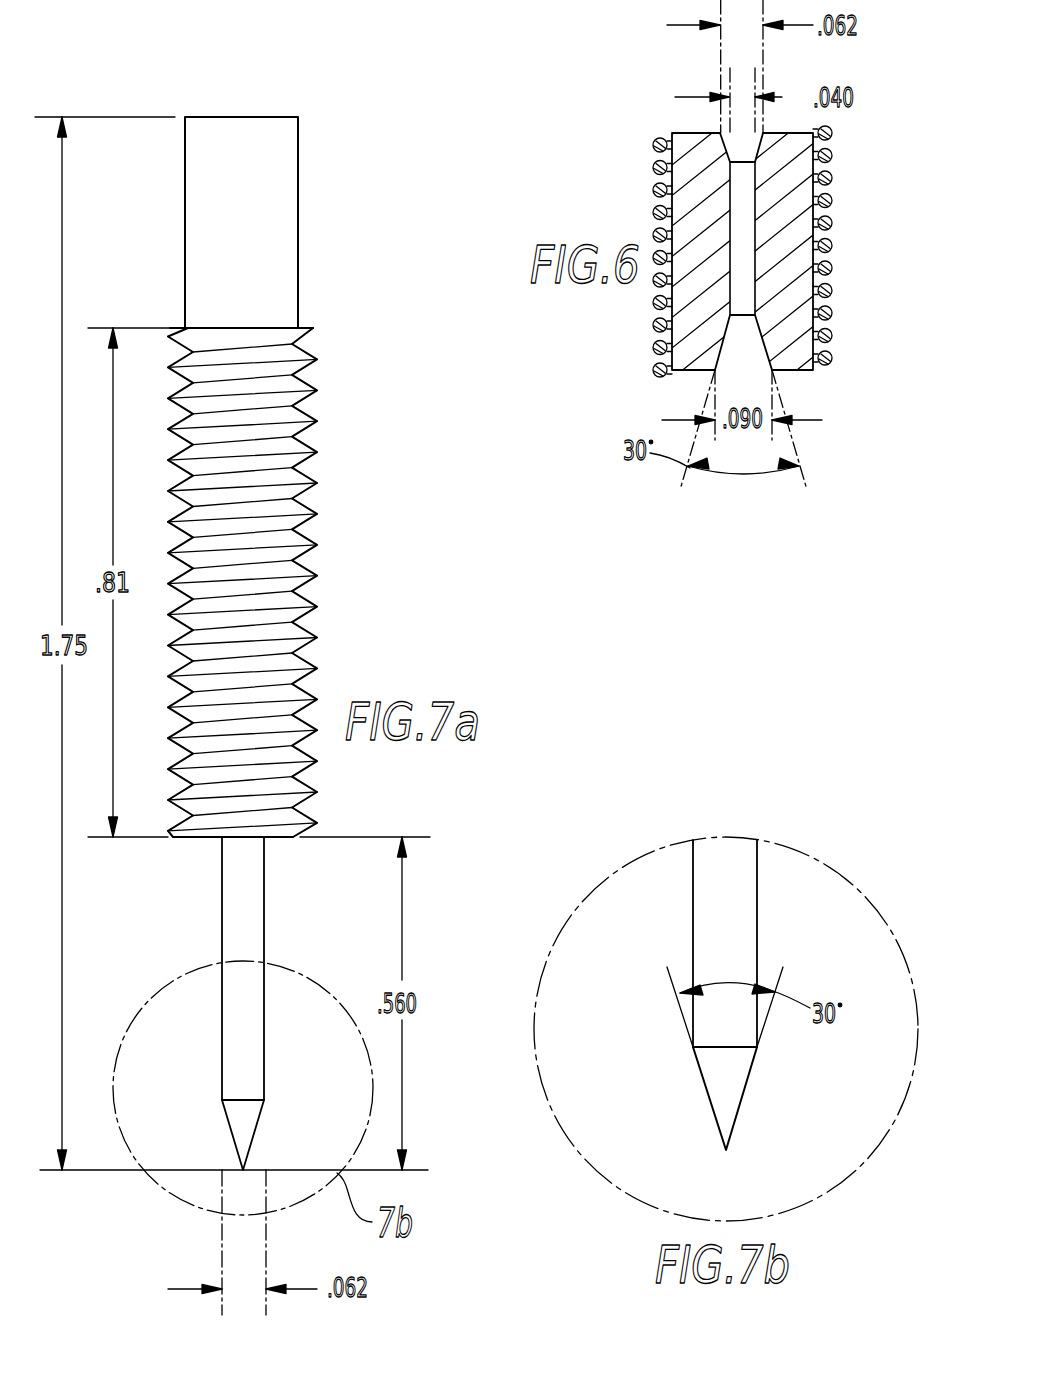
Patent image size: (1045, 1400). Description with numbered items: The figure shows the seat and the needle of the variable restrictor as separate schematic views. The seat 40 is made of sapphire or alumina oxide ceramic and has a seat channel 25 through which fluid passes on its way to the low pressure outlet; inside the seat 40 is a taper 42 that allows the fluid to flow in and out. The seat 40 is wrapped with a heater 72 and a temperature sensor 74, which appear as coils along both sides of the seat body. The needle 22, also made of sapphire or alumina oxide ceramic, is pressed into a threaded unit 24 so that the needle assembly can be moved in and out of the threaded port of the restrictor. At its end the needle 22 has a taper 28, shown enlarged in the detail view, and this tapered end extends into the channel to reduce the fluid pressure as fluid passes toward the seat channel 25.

In FIG. 7A, the needle 22 is at (264, 923).
In FIG. 7A, the threaded unit 24 is at (313, 512).
In FIG. 6, the seat channel 25 is at (757, 143).
In FIG. 7B, the taper 28 is at (703, 1067).
In FIG. 6, the seat 40 is at (664, 127).
In FIG. 6, the taper 42 is at (723, 337).
In FIG. 6, the heater 72 is at (833, 220).
In FIG. 6, the temperature sensor 74 is at (818, 348).